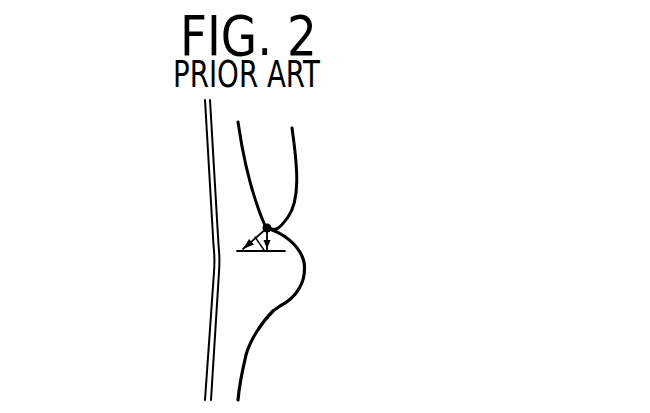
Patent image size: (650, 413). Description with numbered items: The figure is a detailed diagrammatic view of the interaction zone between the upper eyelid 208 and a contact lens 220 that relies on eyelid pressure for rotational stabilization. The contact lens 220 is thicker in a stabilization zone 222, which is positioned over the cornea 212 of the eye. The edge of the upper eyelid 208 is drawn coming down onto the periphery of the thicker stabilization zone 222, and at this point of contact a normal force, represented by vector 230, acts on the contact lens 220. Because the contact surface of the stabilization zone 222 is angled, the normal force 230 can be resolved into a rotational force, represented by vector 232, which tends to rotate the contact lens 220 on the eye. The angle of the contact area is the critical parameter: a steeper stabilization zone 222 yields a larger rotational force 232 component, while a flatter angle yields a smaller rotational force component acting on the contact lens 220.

The upper eyelid 208 is at (295, 146).
The cornea 212 is at (212, 350).
The contact lens 220 is at (210, 252).
The stabilization zone 222 is at (275, 311).
The normal force vector 230 is at (262, 230).
The rotational force vector 232 is at (282, 232).